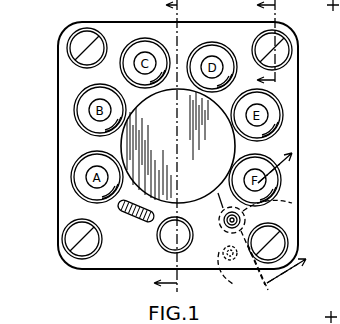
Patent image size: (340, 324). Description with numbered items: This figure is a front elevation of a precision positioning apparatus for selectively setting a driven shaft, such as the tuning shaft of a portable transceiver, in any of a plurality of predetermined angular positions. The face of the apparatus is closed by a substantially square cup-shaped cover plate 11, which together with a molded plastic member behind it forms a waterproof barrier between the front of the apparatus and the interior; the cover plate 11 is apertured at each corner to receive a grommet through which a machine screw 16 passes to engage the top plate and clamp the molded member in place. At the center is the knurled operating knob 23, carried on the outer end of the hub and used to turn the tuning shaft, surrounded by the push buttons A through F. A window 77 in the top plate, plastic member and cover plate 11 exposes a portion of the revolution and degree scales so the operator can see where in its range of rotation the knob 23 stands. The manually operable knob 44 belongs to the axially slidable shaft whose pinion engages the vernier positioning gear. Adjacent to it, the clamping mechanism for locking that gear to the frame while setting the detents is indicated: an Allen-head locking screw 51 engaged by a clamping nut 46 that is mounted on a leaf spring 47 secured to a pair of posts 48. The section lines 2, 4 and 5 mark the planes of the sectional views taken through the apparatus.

The cover plate 11 is at (297, 97).
The machine screw 16 is at (72, 50).
The knurled operating knob 23 is at (167, 136).
The window 77 is at (128, 216).
The manually operable knob 44 is at (158, 238).
The Allen-head locking screw 51 is at (226, 217).
The clamping nut 46 is at (218, 249).
The posts 48 is at (294, 203).
The leaf spring 47 is at (265, 276).
The section line 2- 2 is at (181, 146).
The section line 4- 4 is at (277, 44).
The section line 5- 5 is at (289, 212).